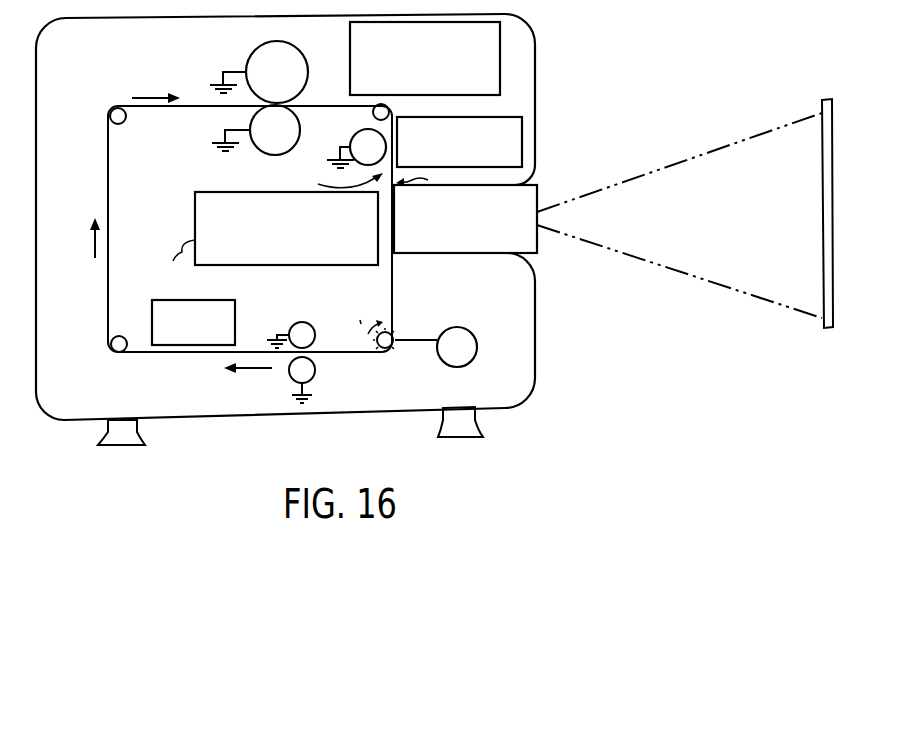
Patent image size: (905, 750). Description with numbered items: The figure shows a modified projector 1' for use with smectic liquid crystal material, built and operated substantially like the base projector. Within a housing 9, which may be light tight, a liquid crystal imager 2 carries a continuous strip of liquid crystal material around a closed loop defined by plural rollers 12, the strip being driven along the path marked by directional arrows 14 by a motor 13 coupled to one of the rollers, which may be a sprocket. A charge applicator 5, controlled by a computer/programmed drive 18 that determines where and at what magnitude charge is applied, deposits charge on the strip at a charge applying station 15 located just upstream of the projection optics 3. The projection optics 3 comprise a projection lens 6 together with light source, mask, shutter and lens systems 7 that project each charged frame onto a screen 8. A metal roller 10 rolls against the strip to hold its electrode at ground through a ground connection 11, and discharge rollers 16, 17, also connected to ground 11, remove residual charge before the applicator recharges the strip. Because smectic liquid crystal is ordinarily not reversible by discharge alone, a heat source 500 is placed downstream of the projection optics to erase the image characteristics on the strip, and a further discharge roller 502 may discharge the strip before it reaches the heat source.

The modified projector 1' is at (317, 227).
The liquid crystal imager 2 is at (336, 88).
The projection optics 3 is at (220, 180).
The charge applicator 5 is at (497, 117).
The projection lens 6 is at (455, 253).
The light source, mask, shutter and lens systems 7 is at (275, 265).
The screen 8 is at (825, 327).
The housing 9 is at (535, 335).
The metal roller 10 is at (351, 138).
The ground connection 11 is at (210, 91).
The rollers 12 is at (125, 122).
The motor 13 is at (477, 355).
The directional arrows 14 is at (145, 96).
The charge applying station 15 is at (338, 180).
The discharge roller 16 is at (258, 45).
The discharge roller 17 is at (271, 139).
The computer/programmed drive 18 is at (500, 32).
The heat source 500 is at (235, 318).
The discharge roller 502 is at (322, 312).